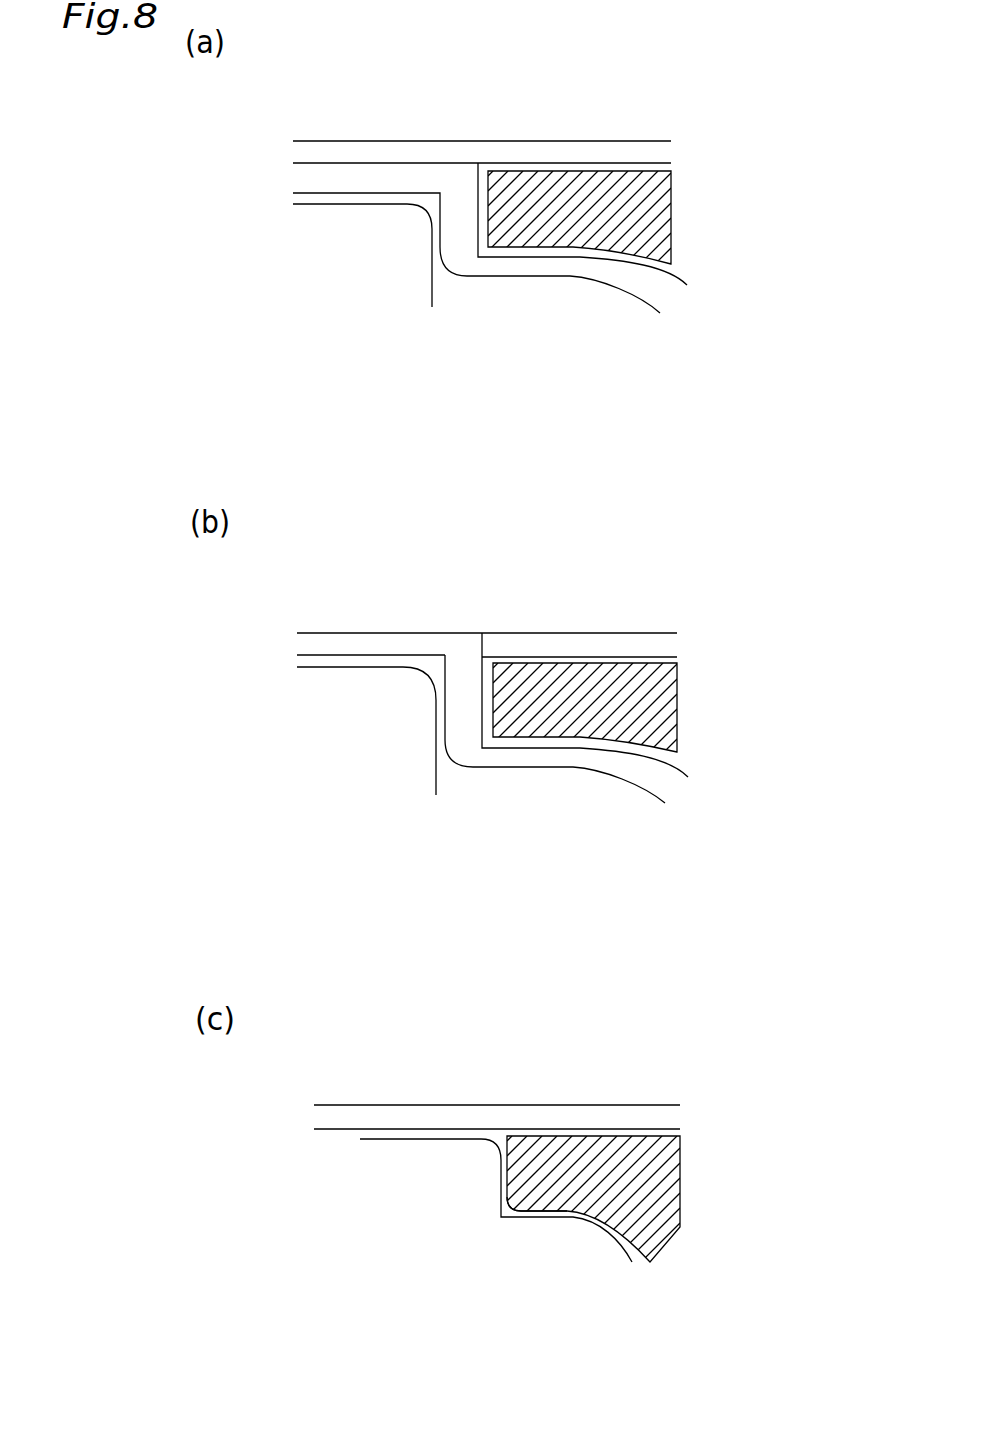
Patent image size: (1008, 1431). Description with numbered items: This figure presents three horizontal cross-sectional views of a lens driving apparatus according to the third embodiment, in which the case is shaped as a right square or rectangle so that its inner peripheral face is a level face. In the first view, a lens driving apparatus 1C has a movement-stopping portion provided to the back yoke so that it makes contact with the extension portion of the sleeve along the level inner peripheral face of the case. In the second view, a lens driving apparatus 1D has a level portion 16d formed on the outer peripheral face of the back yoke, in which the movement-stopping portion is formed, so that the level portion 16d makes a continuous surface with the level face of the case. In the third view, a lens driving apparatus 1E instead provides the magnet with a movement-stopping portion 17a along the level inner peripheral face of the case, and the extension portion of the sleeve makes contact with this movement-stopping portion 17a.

The level portion 16d is at (342, 630).
The movement-stopping portion 17a is at (508, 1173).
The lens driving apparatus 1C is at (723, 225).
The lens driving apparatus 1D is at (728, 718).
The lens driving apparatus 1E is at (733, 1190).